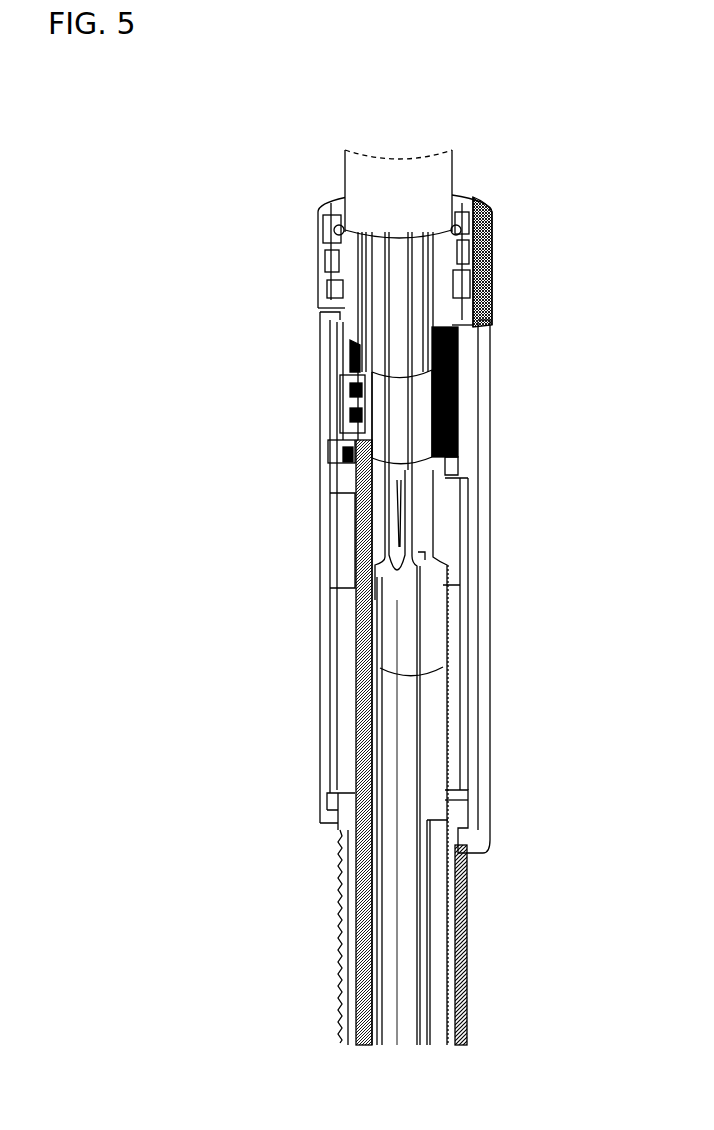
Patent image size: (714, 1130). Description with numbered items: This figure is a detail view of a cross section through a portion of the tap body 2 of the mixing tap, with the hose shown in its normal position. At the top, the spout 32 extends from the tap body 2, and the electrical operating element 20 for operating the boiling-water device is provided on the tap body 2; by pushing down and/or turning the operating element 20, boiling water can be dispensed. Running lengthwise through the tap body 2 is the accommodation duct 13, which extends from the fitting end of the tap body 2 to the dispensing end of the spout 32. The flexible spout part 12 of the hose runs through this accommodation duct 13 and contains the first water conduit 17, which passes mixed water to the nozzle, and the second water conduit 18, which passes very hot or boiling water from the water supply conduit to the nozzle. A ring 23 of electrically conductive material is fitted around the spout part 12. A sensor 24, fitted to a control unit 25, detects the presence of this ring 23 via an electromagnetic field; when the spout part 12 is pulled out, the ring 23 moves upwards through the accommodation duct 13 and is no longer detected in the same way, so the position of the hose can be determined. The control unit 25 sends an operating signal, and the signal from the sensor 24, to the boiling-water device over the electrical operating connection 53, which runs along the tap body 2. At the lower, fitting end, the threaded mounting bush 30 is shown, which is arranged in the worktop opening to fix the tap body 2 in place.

The spout 32 is at (397, 175).
The operating element 20 is at (470, 207).
The control unit 25 is at (353, 360).
The sensor 24 is at (350, 402).
The accommodation duct 13 is at (343, 472).
The ring 23 is at (405, 422).
The first water conduit 17 is at (420, 503).
The second water conduit 18 is at (400, 537).
The spout part 12 is at (430, 703).
The operating connection 53 is at (358, 703).
The tap body 2 is at (483, 745).
The mounting bush 30 is at (460, 977).